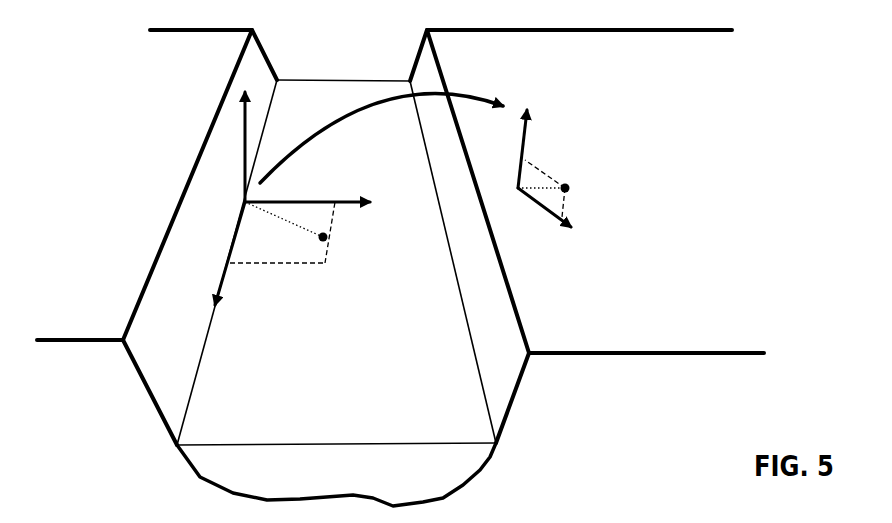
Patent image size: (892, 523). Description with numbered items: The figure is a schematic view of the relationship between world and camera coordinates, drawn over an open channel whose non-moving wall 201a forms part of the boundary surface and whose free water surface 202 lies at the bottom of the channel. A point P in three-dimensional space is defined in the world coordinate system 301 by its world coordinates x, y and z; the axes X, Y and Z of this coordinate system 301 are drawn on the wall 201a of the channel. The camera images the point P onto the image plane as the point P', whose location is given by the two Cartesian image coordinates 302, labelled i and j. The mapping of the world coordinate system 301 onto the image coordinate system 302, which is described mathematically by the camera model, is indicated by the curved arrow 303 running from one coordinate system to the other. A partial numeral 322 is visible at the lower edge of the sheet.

The wall 201a is at (158, 367).
The water surface 202 is at (200, 443).
The coordinate system 301 is at (245, 118).
The image coordinates 302 is at (537, 203).
The arrow 303 is at (385, 98).
The partial numeral at sheet edge 322 is at (618, 519).